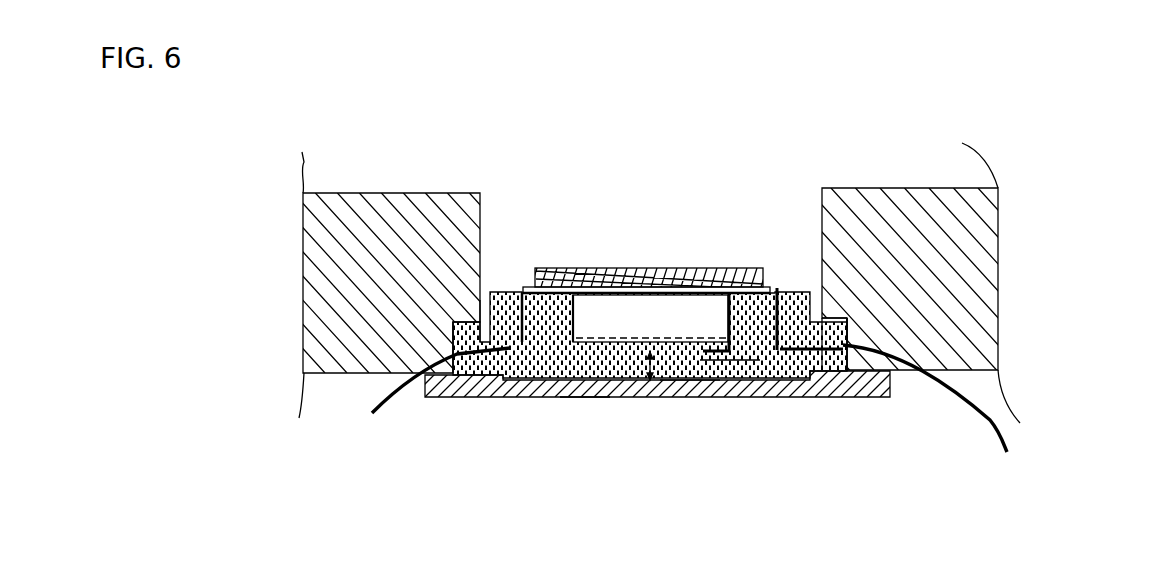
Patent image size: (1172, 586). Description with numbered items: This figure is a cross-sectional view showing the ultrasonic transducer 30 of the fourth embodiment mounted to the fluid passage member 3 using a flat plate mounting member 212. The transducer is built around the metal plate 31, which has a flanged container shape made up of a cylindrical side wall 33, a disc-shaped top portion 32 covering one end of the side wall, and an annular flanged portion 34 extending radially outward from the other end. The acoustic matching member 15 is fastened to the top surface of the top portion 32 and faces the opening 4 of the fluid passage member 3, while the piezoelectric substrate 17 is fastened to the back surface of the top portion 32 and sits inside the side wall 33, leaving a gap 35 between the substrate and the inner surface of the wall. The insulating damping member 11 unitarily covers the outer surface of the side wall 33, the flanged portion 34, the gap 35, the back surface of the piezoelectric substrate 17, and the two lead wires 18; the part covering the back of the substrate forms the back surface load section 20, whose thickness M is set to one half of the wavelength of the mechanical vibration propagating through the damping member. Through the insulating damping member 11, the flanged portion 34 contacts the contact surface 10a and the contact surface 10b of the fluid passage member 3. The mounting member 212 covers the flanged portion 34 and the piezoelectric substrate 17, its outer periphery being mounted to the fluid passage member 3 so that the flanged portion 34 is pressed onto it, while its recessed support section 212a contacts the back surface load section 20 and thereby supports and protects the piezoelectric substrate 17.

The fluid passage member 3 is at (1000, 228).
The opening 4 is at (738, 215).
The contact surface 10a is at (838, 325).
The contact surface 10b is at (845, 333).
The insulating damping member 11 is at (480, 313).
The acoustic matching member 15 is at (543, 265).
The piezoelectric substrate 17 is at (580, 393).
The lead wires 18 is at (392, 395).
The back surface load section 20 is at (673, 380).
The ultrasonic transducer 30 is at (640, 243).
The metal plate 31 is at (455, 325).
The top portion 32 is at (603, 267).
The side wall 33 is at (788, 283).
The flanged portion 34 is at (845, 342).
The gap 35 is at (730, 358).
The mounting member 212 is at (892, 388).
The support section 212a is at (698, 398).
The thickness M is at (617, 397).